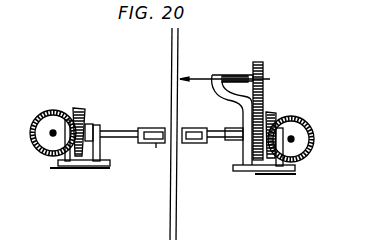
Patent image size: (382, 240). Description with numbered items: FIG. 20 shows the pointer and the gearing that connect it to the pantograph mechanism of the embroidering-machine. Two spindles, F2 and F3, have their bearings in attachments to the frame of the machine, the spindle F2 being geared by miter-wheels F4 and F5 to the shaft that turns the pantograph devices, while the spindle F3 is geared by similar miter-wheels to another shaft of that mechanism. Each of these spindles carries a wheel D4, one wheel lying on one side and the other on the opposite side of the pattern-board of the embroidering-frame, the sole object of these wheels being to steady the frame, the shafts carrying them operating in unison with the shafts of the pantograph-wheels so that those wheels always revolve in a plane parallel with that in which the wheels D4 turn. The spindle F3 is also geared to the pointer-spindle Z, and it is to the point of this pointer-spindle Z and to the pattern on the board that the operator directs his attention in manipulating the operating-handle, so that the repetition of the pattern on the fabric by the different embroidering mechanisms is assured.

The miter-wheel F4 is at (58, 111).
The miter-wheel F5 is at (81, 113).
The spindle F2 is at (119, 127).
The wheel D4 is at (157, 144).
The spindle F3 is at (225, 129).
The pointer-spindle Z is at (225, 74).